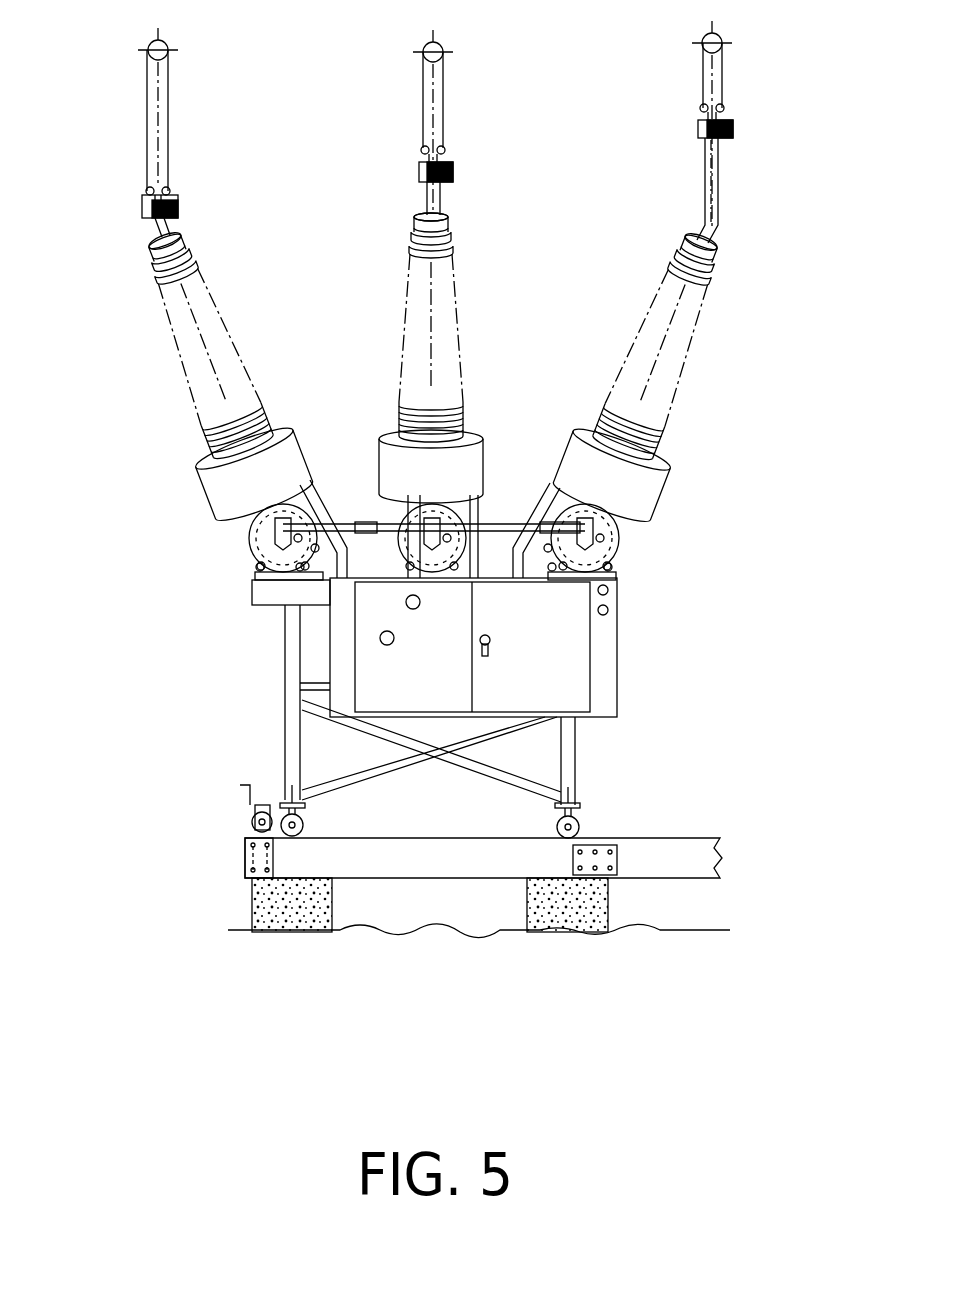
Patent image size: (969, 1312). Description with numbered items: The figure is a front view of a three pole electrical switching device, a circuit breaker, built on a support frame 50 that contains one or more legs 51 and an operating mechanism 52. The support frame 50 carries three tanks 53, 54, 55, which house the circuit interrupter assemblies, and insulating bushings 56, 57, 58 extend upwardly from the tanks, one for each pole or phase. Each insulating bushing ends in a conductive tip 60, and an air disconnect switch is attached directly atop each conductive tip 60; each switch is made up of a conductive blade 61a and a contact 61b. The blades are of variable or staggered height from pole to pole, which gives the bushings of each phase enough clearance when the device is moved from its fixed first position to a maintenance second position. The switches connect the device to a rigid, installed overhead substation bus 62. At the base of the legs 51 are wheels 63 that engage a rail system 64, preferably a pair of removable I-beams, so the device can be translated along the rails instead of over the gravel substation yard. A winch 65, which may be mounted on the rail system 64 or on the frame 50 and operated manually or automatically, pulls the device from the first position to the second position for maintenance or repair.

The support frame 50 is at (290, 640).
The legs 51 is at (572, 757).
The operating mechanism 52 is at (600, 632).
The tank 53 is at (250, 553).
The tank 54 is at (475, 505).
The tank 55 is at (620, 545).
The insulating bushing 56 is at (196, 365).
The insulating bushing 57 is at (405, 318).
The insulating bushing 58 is at (660, 382).
The conductive tip 60 is at (160, 236).
The conductive blade 61a is at (168, 233).
The contact 61b is at (178, 208).
The substation bus 62 is at (174, 102).
The wheels 63 is at (305, 822).
The rail system 64 is at (293, 860).
The winch 65 is at (254, 825).